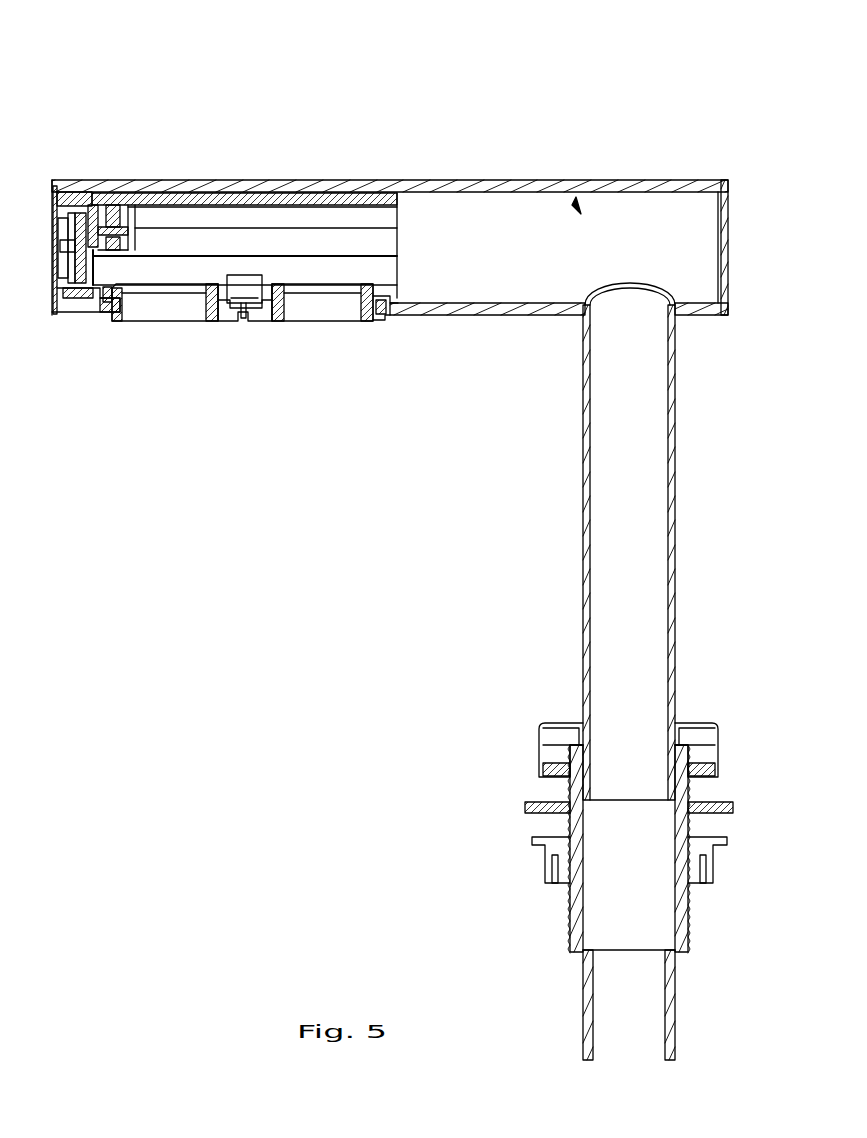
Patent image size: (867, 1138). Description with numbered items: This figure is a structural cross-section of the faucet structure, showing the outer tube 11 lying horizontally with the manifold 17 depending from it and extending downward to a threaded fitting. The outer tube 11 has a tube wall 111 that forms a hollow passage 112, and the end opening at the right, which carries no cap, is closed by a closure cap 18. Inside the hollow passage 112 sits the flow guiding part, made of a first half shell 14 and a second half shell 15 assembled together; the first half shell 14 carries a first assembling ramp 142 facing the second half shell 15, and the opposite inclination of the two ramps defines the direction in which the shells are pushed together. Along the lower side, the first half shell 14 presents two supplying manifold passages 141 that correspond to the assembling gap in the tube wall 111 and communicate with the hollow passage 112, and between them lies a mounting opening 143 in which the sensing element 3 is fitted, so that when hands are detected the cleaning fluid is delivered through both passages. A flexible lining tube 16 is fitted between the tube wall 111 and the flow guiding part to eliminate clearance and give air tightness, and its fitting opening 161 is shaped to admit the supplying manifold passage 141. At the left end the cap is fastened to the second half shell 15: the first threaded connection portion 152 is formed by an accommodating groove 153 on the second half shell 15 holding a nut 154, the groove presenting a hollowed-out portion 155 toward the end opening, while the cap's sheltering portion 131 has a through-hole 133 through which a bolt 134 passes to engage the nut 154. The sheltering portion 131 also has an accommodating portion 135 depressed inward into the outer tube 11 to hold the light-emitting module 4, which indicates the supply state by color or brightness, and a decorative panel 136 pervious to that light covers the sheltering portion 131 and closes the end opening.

The outer tube 11 is at (390, 241).
The tube wall 111 is at (515, 187).
The hollow passage 112 is at (577, 197).
The closure cap 18 is at (720, 288).
The manifold 17 is at (583, 643).
The first half shell 14 is at (260, 255).
The second half shell 15 is at (244, 183).
The first assembling ramp 142 is at (310, 257).
The supplying manifold passage 141 is at (160, 314).
The mounting opening 143 is at (255, 310).
The fitting opening 161 is at (108, 304).
The flexible lining tube 16 is at (390, 305).
The decorative panel 136 is at (53, 210).
The accommodating portion 135 is at (67, 200).
The sheltering portion 131 is at (63, 312).
The light-emitting module 4 is at (70, 272).
The bolt 134 is at (76, 230).
The through-hole 133 is at (67, 250).
The hollowed-out portion 155 is at (92, 204).
The first threaded connection portion 152 is at (138, 155).
The nut 154 is at (117, 216).
The accommodating groove 153 is at (120, 226).
The sensing element 3 is at (238, 286).